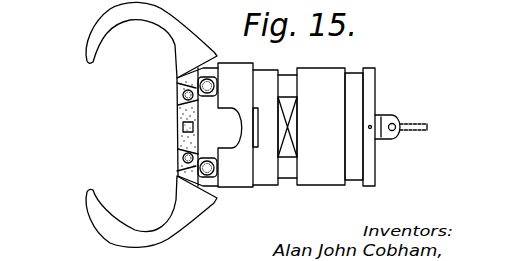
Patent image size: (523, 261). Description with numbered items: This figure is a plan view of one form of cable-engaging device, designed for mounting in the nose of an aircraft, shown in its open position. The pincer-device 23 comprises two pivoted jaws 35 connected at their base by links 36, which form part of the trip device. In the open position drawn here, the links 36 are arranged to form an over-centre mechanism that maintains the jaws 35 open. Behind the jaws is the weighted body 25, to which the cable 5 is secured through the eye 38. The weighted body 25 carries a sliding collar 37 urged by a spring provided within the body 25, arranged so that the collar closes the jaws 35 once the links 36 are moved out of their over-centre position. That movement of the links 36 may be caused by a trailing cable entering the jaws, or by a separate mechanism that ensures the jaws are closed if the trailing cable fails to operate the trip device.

The pivoted jaws 35 is at (140, 13).
The links 36 is at (180, 110).
The pincer-device 23 is at (158, 131).
The sliding collar 37 is at (240, 167).
The weighted body 25 is at (327, 158).
The eye 38 is at (388, 120).
The cable 5 is at (422, 124).